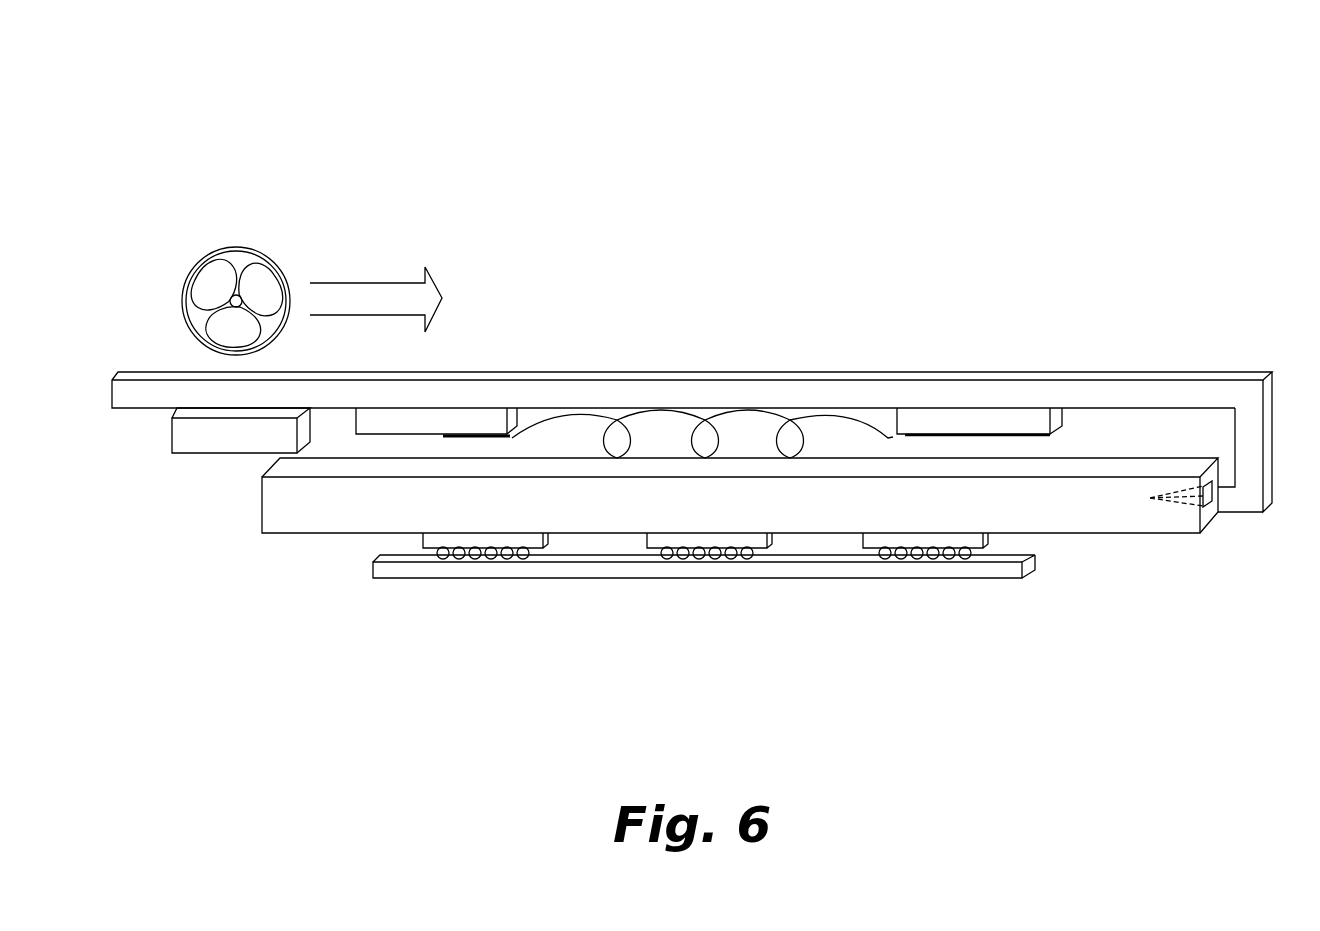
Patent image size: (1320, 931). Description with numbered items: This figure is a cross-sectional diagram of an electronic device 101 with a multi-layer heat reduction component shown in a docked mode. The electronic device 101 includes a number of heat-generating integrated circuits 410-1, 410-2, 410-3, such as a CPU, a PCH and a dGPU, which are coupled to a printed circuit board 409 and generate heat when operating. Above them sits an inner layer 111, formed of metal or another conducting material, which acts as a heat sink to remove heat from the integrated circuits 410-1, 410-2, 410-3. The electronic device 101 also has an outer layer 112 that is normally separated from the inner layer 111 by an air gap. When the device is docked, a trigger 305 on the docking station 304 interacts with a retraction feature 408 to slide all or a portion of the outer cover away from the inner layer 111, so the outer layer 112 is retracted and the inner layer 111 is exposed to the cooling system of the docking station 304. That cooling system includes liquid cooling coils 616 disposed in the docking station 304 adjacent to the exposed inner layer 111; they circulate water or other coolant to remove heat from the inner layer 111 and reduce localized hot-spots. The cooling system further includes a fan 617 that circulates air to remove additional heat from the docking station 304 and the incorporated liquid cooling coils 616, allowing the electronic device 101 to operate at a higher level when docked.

The electronic device 101 is at (620, 115).
The fan 617 is at (237, 247).
The docking station 304 is at (595, 372).
The trigger 305 is at (1240, 512).
The outer layer 112 is at (205, 453).
The liquid cooling coils 616 is at (873, 413).
The inner layer 111 is at (1110, 533).
The retraction feature 408 is at (1205, 512).
The integrated circuit 410-1 is at (538, 578).
The integrated circuit 410-2 is at (758, 578).
The integrated circuit 410-3 is at (975, 578).
The printed circuit board 409 is at (895, 578).